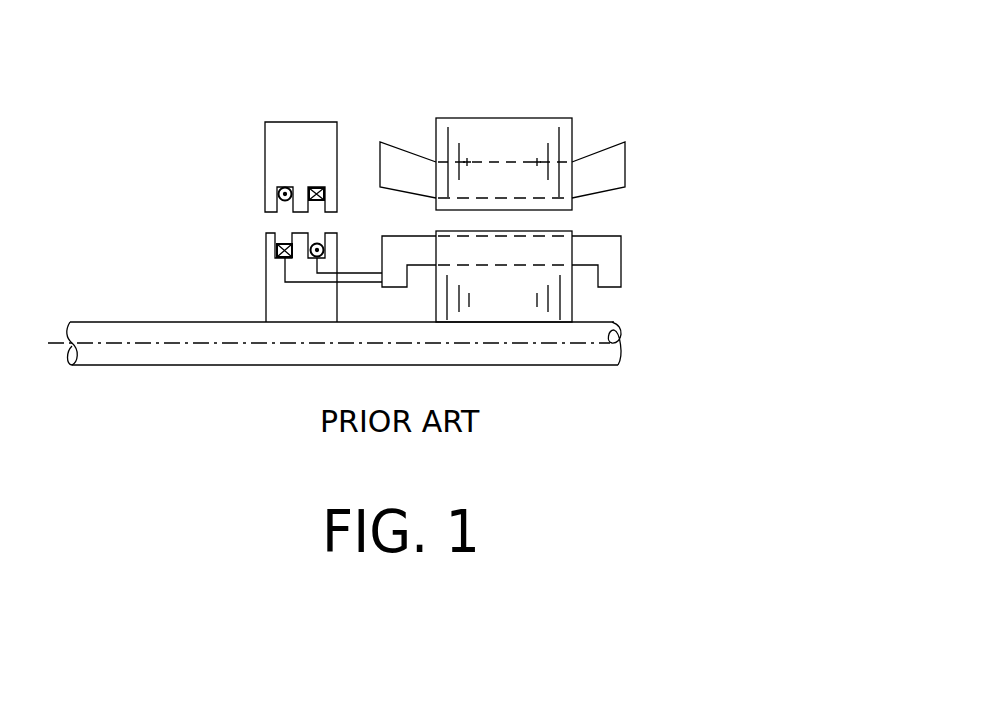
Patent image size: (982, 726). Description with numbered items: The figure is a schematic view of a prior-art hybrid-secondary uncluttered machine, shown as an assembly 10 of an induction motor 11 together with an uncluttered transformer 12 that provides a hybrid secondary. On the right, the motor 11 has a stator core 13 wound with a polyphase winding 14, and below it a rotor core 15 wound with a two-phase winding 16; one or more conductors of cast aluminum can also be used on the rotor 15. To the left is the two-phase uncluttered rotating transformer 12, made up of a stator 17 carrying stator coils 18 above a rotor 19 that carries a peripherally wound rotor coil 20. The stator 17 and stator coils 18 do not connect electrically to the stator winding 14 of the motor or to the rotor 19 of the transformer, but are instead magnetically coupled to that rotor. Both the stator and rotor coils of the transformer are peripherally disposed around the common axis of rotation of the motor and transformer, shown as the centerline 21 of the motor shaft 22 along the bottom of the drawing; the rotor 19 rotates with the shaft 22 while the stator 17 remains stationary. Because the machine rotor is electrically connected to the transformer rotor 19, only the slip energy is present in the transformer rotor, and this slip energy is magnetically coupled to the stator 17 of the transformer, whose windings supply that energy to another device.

The assembly 10 is at (600, 122).
The induction motor 11 is at (492, 108).
The uncluttered transformer 12 is at (298, 118).
The stator core 13 is at (467, 120).
The polyphase winding 14 is at (625, 163).
The rotor core 15 is at (572, 308).
The two-phase winding 16 is at (623, 263).
The stator 17 is at (265, 137).
The stator coils 18 is at (278, 187).
The rotor 19 is at (265, 294).
The rotor coil 20 is at (267, 236).
The rail axis 21 is at (630, 342).
The motor shaft 22 is at (525, 365).